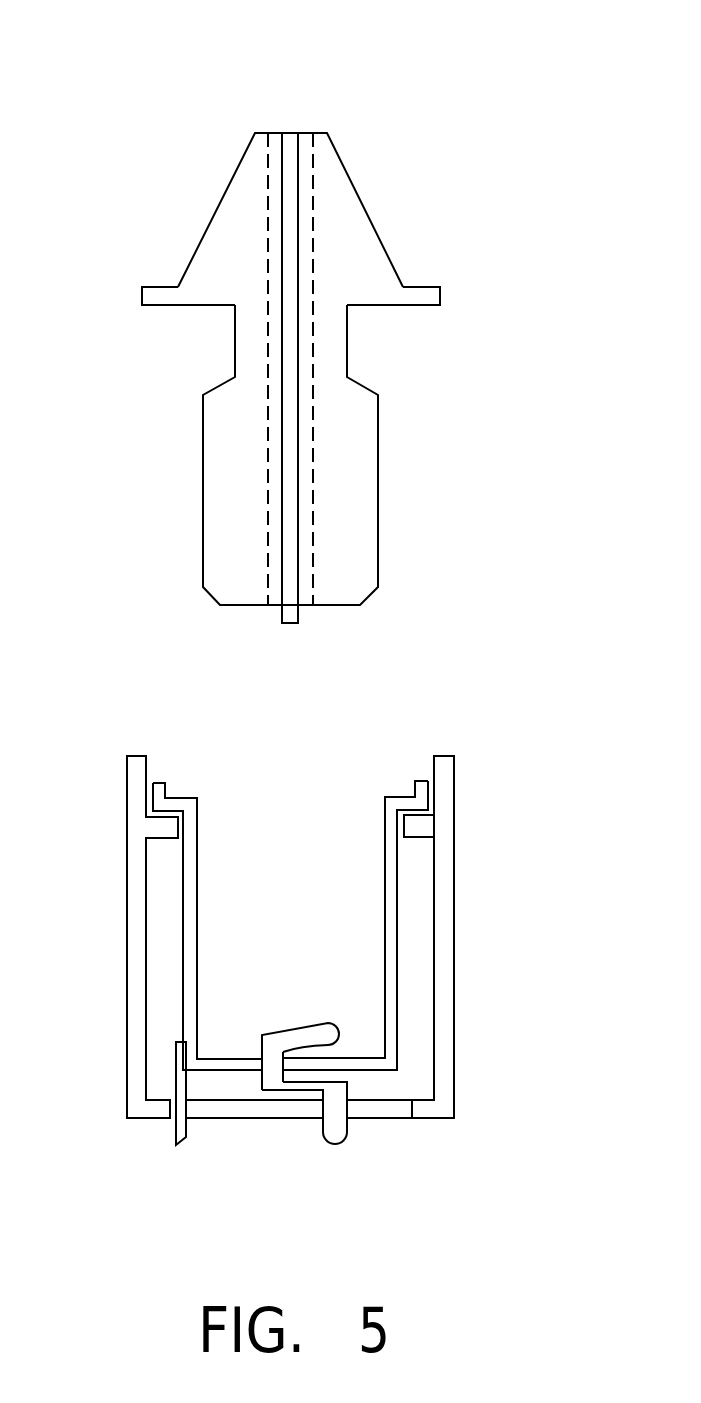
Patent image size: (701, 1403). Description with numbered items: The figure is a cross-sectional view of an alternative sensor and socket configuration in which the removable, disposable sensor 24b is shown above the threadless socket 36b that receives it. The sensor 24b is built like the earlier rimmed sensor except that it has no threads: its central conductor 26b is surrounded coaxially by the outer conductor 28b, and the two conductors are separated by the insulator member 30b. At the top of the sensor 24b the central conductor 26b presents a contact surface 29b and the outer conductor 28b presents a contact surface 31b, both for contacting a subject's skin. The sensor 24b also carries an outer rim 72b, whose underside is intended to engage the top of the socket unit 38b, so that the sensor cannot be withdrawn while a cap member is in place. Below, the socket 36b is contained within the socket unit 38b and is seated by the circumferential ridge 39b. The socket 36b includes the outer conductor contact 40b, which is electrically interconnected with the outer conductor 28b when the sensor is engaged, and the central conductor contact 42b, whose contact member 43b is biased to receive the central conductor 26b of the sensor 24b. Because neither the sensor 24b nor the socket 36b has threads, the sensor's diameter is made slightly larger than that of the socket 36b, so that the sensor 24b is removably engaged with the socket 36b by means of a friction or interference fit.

The sensor 24b is at (307, 354).
The central conductor 26b is at (295, 625).
The outer conductor 28b is at (237, 171).
The contact surface 29b is at (296, 133).
The insulator member 30b is at (272, 132).
The contact surface 31b is at (320, 132).
The outer rim 72b is at (158, 306).
The socket 36b is at (392, 923).
The socket unit 38b is at (314, 937).
The circumferential ridge 39b is at (420, 823).
The outer conductor contact 40b is at (175, 1128).
The central conductor contact 42b is at (337, 1132).
The contact member 43b is at (328, 1032).